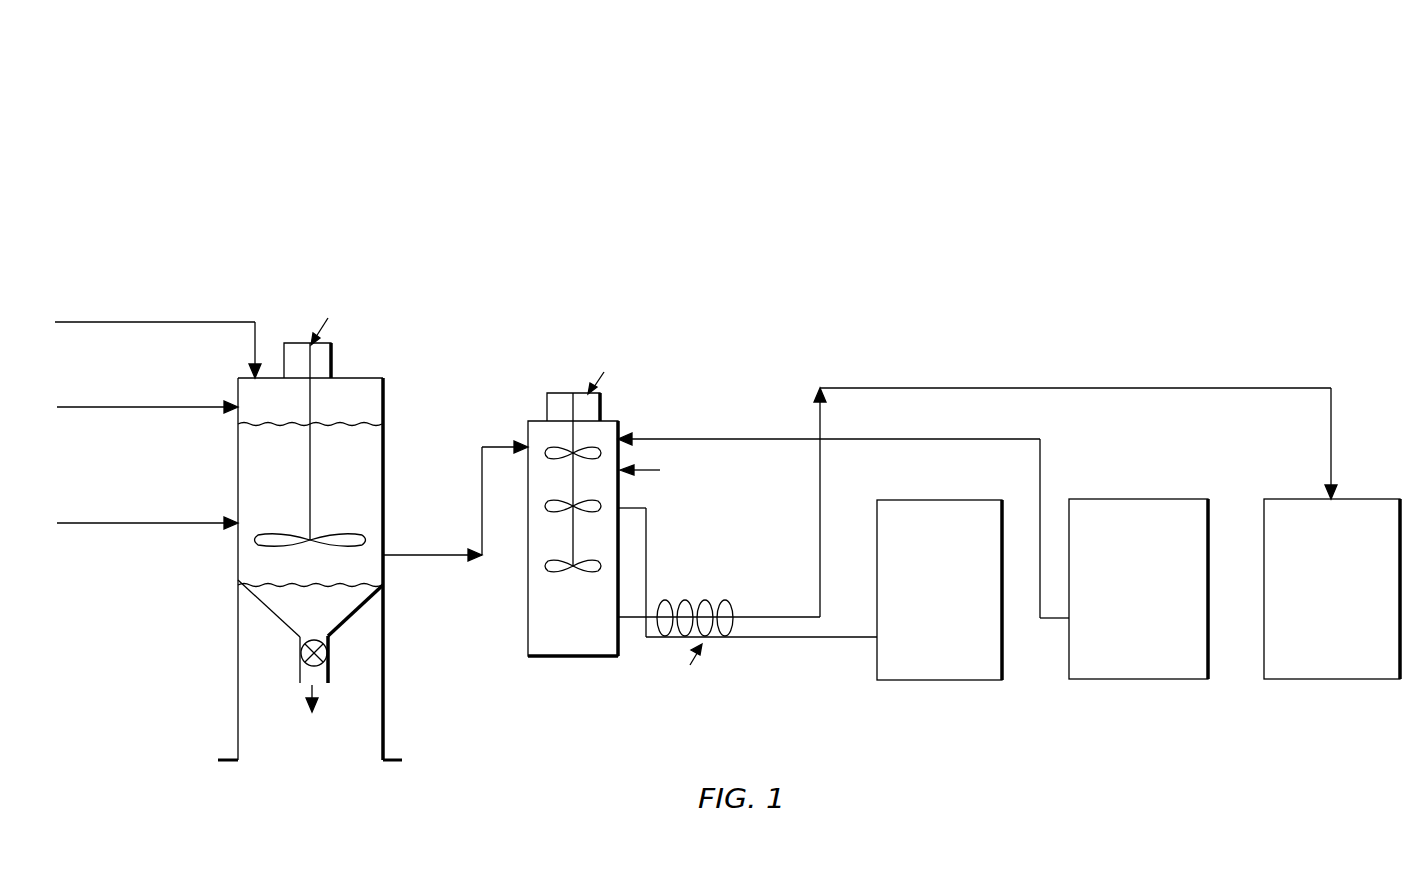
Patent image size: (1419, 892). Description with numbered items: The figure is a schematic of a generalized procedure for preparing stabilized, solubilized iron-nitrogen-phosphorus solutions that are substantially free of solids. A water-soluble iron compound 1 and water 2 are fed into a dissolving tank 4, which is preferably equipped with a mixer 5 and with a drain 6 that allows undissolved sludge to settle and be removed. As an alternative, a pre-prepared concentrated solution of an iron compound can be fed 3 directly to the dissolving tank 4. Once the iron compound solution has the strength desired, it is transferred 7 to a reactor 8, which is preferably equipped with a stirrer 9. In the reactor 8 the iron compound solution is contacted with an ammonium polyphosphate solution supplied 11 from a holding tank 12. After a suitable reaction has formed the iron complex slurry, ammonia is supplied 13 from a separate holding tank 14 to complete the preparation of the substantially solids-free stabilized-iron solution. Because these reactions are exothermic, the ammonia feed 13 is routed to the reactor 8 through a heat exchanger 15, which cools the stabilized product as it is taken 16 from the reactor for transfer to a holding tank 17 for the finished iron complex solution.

The water-soluble iron compound 1 is at (207, 322).
The water 2 is at (201, 523).
The concentrated iron compound solution feed 3 is at (163, 407).
The dissolving tank 4 is at (386, 470).
The mixer 5 is at (333, 346).
The drain 6 is at (299, 654).
The solution transfer 7 is at (414, 554).
The reactor 8 is at (620, 421).
The stirrer 9 is at (550, 393).
The ammonium polyphosphate solution supply 11 is at (706, 439).
The holding tank 12 is at (1138, 589).
The ammonia supply 13 is at (648, 541).
The holding tank 14 is at (939, 590).
The heat exchanger 15 is at (733, 598).
The product take-off 16 is at (820, 533).
The holding tank 17 is at (1332, 589).